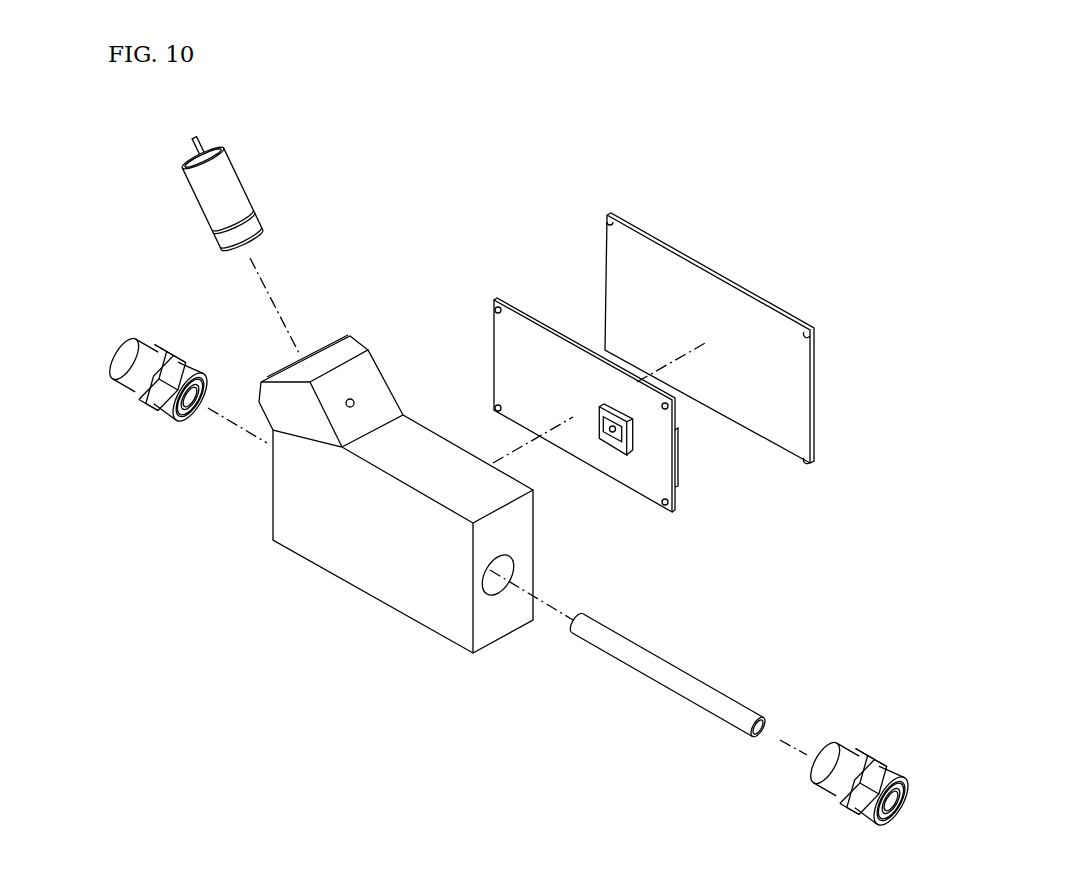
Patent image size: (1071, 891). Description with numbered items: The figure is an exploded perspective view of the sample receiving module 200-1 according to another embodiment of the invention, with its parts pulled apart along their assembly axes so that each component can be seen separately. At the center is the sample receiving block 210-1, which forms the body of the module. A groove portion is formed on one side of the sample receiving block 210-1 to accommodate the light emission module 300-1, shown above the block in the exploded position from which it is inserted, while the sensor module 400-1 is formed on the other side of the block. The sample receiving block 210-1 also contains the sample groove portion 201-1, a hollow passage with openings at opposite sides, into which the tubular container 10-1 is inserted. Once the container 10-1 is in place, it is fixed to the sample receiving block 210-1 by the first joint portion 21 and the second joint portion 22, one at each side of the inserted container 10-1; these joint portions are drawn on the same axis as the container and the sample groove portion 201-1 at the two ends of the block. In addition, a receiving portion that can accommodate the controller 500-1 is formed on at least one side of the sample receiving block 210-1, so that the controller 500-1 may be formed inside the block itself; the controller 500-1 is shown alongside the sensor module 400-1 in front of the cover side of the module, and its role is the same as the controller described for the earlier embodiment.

The container 10-1 is at (662, 678).
The first joint portion 21 is at (855, 798).
The second joint portion 22 is at (120, 375).
The sample receiving module 200-1 is at (748, 228).
The sample groove portion 201-1 is at (488, 588).
The sample receiving block 210-1 is at (358, 548).
The light emission module 300-1 is at (228, 178).
The sensor module 400-1 is at (612, 445).
The controller 500-1 is at (510, 353).